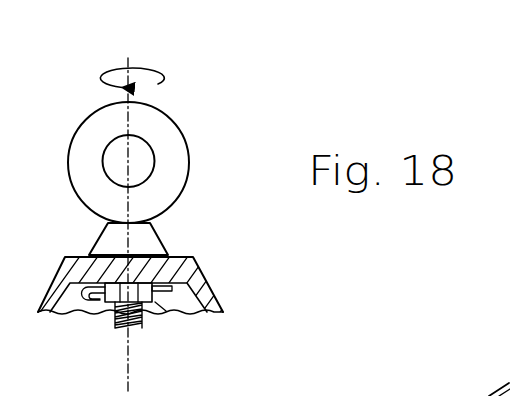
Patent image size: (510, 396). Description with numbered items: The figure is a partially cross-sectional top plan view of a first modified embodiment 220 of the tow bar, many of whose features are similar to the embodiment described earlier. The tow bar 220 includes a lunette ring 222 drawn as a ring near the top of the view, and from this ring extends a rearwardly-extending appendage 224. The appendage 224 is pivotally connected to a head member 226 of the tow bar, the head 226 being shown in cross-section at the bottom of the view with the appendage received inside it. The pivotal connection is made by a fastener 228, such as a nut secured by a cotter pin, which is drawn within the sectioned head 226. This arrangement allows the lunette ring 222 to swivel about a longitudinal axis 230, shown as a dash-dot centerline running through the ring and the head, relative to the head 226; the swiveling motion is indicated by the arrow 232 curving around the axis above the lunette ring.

The first modified embodiment of the tow bar 220 is at (238, 94).
The lunette ring 222 is at (186, 153).
The rearwardly-extending appendage 224 is at (137, 320).
The head member 226 is at (201, 273).
The fastener 228 is at (121, 298).
The longitudinal axis 230 is at (156, 225).
The arrow 232 is at (160, 73).